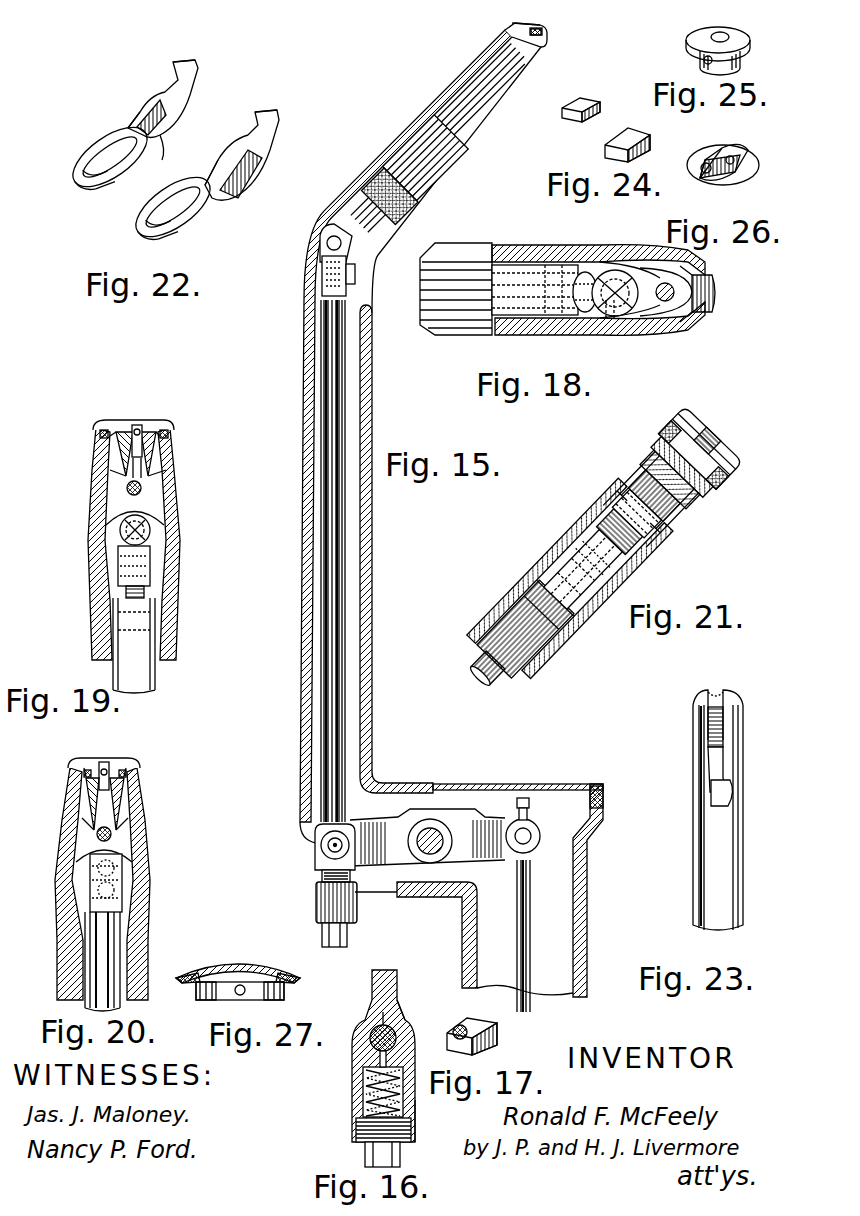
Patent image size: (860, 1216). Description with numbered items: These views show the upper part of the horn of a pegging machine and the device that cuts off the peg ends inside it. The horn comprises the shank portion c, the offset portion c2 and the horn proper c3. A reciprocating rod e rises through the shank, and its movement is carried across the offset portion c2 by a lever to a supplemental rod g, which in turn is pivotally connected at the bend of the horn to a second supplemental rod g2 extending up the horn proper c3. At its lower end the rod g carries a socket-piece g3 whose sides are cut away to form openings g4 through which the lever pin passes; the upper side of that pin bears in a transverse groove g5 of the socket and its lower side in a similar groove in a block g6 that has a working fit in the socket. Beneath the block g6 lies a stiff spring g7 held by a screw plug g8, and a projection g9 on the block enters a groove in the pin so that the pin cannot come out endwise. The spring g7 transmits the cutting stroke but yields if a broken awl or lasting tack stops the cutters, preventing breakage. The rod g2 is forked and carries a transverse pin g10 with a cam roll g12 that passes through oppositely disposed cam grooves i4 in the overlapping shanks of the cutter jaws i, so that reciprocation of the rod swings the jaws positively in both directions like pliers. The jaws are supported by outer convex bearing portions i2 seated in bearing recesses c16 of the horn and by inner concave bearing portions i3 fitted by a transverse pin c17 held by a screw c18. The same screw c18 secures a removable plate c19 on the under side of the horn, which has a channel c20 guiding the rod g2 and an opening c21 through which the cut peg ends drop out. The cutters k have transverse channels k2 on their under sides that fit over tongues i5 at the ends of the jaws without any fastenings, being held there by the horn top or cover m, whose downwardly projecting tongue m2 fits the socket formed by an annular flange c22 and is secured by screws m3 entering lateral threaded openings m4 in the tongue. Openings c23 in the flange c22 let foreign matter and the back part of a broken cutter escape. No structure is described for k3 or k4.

In FIG. 15, the shank portion c is at (588, 935).
In FIG. 15, the offset portion c2 is at (430, 782).
In FIG. 15, the horn proper c3 is at (423, 433).
In FIG. 18, the horn proper c3 is at (470, 333).
In FIG. 19, the horn proper c3 is at (178, 622).
In FIG. 20, the horn proper c3 is at (140, 938).
In FIG. 21, the horn proper c3 is at (545, 585).
In FIG. 19, the bearing recesses c16 is at (166, 470).
In FIG. 18, the transverse pin c17 is at (665, 302).
In FIG. 19, the transverse pin c17 is at (141, 488).
In FIG. 20, the transverse pin c17 is at (112, 834).
In FIG. 18, the screw c18 is at (688, 312).
In FIG. 19, the screw c18 is at (148, 506).
In FIG. 20, the screw c18 is at (120, 848).
In FIG. 21, the screw c18 is at (692, 498).
In FIG. 21, the removable plate c19 is at (680, 522).
In FIG. 21, the channel c20 is at (665, 545).
In FIG. 21, the opening c21 is at (718, 480).
In FIG. 21, the annular flange c22 is at (736, 458).
In FIG. 15, the openings c23 is at (540, 36).
In FIG. 19, the openings c23 is at (168, 432).
In FIG. 20, the openings c23 is at (84, 774).
In FIG. 15, the reciprocating rod e is at (532, 960).
In FIG. 15, the supplemental rod g is at (340, 560).
In FIG. 15, the supplemental rod g2 is at (366, 234).
In FIG. 18, the supplemental rod g2 is at (520, 268).
In FIG. 19, the supplemental rod g2 is at (155, 672).
In FIG. 20, the supplemental rod g2 is at (85, 970).
In FIG. 21, the supplemental rod g2 is at (488, 672).
In FIG. 23, the supplemental rod g2 is at (693, 840).
In FIG. 15, the socket-piece g3 is at (350, 900).
In FIG. 16, the socket-piece g3 is at (415, 1115).
In FIG. 15, the openings g4 is at (322, 875).
In FIG. 16, the transverse groove g5 is at (374, 1026).
In FIG. 15, the block g6 is at (315, 850).
In FIG. 16, the block g6 is at (357, 1050).
In FIG. 17, the block g6 is at (497, 1040).
In FIG. 15, the spring g7 is at (326, 890).
In FIG. 16, the spring g7 is at (356, 1118).
In FIG. 15, the screw plug g8 is at (322, 936).
In FIG. 16, the screw plug g8 is at (365, 1158).
In FIG. 16, the projection g9 is at (363, 1092).
In FIG. 17, the projection g9 is at (463, 1025).
In FIG. 18, the transverse pin g10 is at (585, 275).
In FIG. 19, the transverse pin g10 is at (150, 570).
In FIG. 20, the transverse pin g10 is at (122, 884).
In FIG. 21, the transverse pin g10 is at (600, 543).
In FIG. 23, the transverse pin g10 is at (708, 738).
In FIG. 18, the cam roll g12 is at (610, 320).
In FIG. 19, the cam roll g12 is at (126, 590).
In FIG. 21, the cam roll g12 is at (650, 565).
In FIG. 23, the cam roll g12 is at (718, 690).
In FIG. 22, the cutter jaws i is at (176, 104).
In FIG. 19, the cutter jaws i is at (150, 456).
In FIG. 20, the cutter jaws i is at (86, 795).
In FIG. 21, the cutter jaws i is at (668, 450).
In FIG. 22, the outer convex bearing portions i2 is at (140, 114).
In FIG. 18, the outer convex bearing portions i2 is at (712, 272).
In FIG. 19, the outer convex bearing portions i2 is at (110, 470).
In FIG. 20, the outer convex bearing portions i2 is at (82, 818).
In FIG. 21, the outer convex bearing portions i2 is at (640, 480).
In FIG. 22, the inner concave bearing portions i3 is at (162, 118).
In FIG. 22, the cam grooves i4 is at (95, 165).
In FIG. 18, the cam grooves i4 is at (620, 272).
In FIG. 19, the cam grooves i4 is at (122, 532).
In FIG. 22, the tongues i5 is at (196, 64).
In FIG. 19, the tongues i5 is at (118, 425).
In FIG. 20, the tongues i5 is at (84, 768).
In FIG. 15, the cutters k is at (472, 820).
In FIG. 24, the cutters k is at (600, 108).
In FIG. 18, the cutters k is at (716, 292).
In FIG. 19, the cutters k is at (137, 425).
In FIG. 20, the cutters k is at (98, 762).
In FIG. 21, the cutters k is at (700, 432).
In FIG. 27, the cutters k is at (190, 976).
In FIG. 15, the transverse channels k2 is at (432, 832).
In FIG. 24, the transverse channels k2 is at (605, 150).
In FIG. 27, the transverse channels k2 is at (205, 1000).
In FIG. 15, the link k3 is at (328, 838).
In FIG. 16, the link k3 is at (405, 1012).
In FIG. 16, the link pin k4 is at (410, 1032).
In FIG. 15, the horn top or cover m is at (512, 28).
In FIG. 25, the horn top or cover m is at (706, 34).
In FIG. 26, the horn top or cover m is at (745, 165).
In FIG. 19, the horn top or cover m is at (96, 428).
In FIG. 21, the horn top or cover m is at (720, 430).
In FIG. 27, the horn top or cover m is at (228, 969).
In FIG. 25, the tongue m2 is at (738, 58).
In FIG. 26, the tongue m2 is at (728, 150).
In FIG. 21, the screws m3 is at (680, 440).
In FIG. 25, the threaded openings m4 is at (704, 60).
In FIG. 26, the threaded openings m4 is at (718, 178).
In FIG. 27, the threaded openings m4 is at (240, 995).